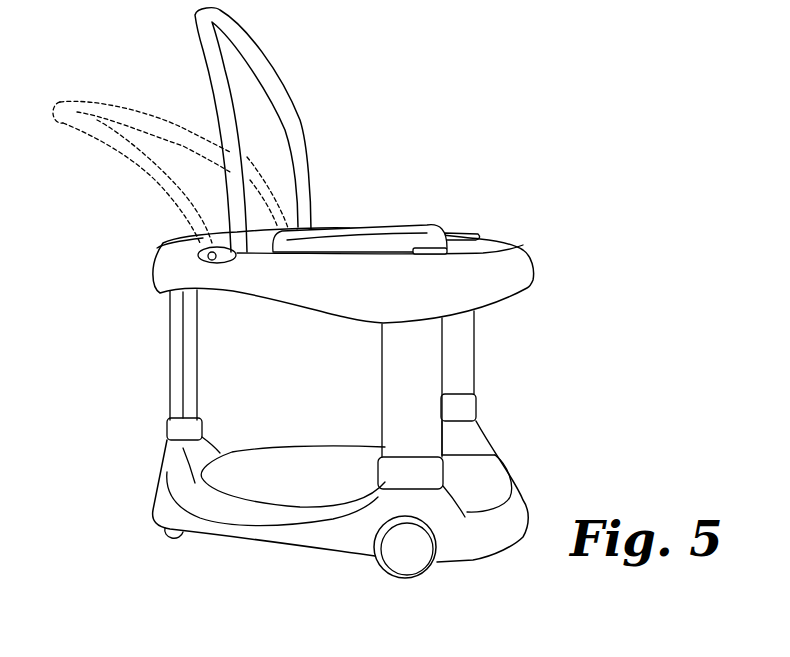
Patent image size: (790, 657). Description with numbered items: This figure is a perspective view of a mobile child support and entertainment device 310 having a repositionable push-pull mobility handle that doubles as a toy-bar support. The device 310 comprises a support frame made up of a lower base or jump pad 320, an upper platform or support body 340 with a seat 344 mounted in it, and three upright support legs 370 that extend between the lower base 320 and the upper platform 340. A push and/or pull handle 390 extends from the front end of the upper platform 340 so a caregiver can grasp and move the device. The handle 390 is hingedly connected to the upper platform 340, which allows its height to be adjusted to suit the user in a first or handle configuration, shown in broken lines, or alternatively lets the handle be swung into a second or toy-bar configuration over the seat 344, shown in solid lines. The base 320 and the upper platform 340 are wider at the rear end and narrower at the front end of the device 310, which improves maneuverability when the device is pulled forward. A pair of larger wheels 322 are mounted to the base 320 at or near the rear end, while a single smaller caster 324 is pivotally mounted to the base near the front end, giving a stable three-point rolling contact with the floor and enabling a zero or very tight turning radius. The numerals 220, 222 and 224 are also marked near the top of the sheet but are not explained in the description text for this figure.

The mobile child support and entertainment device 310 is at (481, 152).
The lower base 320 is at (492, 472).
The wheels 322 is at (400, 563).
The caster 324 is at (170, 535).
The upper platform 340 is at (511, 282).
The seat 344 is at (379, 233).
The upright support legs 370 is at (177, 363).
The handle 390 is at (204, 22).
The support frame 220 is at (597, 0).
The frame member 222 is at (760, 4).
The frame member 224 is at (453, 0).